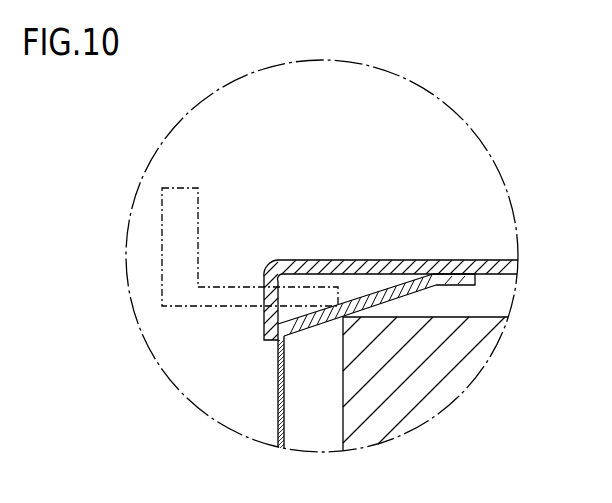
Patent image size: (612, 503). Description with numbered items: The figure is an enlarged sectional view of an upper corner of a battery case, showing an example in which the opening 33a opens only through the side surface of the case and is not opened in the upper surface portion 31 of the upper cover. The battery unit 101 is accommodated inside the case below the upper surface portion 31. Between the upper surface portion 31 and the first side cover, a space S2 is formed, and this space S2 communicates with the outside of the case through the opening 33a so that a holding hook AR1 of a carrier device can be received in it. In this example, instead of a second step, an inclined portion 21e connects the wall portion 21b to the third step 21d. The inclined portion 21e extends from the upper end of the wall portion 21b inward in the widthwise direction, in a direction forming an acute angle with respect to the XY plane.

The holding hook AR1 is at (160, 229).
The space S2 is at (354, 283).
The upper surface portion 31 is at (466, 262).
The third step 21d is at (457, 279).
The battery unit 101 is at (443, 367).
The opening 33a is at (268, 287).
The inclined portion 21e is at (275, 354).
The wall portion 21b is at (276, 402).